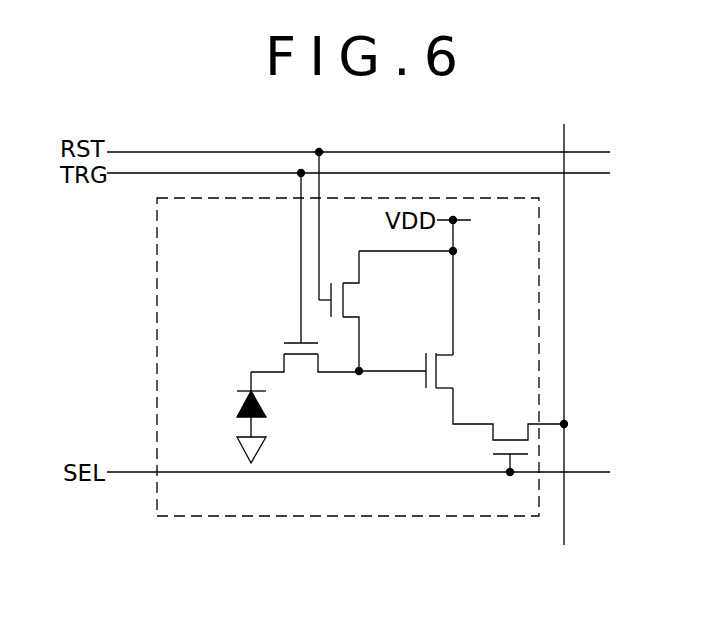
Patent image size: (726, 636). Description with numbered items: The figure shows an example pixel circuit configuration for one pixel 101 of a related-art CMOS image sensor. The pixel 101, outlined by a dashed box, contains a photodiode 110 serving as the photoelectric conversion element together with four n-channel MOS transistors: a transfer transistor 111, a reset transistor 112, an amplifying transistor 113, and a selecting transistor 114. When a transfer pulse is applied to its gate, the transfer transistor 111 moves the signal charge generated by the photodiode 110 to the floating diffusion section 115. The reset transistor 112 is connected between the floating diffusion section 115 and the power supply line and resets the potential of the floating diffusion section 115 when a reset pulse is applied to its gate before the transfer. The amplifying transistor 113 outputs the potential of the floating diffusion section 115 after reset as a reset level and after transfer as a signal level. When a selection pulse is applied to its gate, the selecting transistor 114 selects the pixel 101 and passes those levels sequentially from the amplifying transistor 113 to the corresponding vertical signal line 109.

The pixel 101 is at (357, 517).
The vertical signal line 109 is at (567, 372).
The photodiode 110 is at (240, 402).
The transfer transistor 111 is at (302, 363).
The reset transistor 112 is at (352, 300).
The amplifying transistor 113 is at (450, 372).
The selecting transistor 114 is at (510, 433).
The floating diffusion section 115 is at (360, 377).